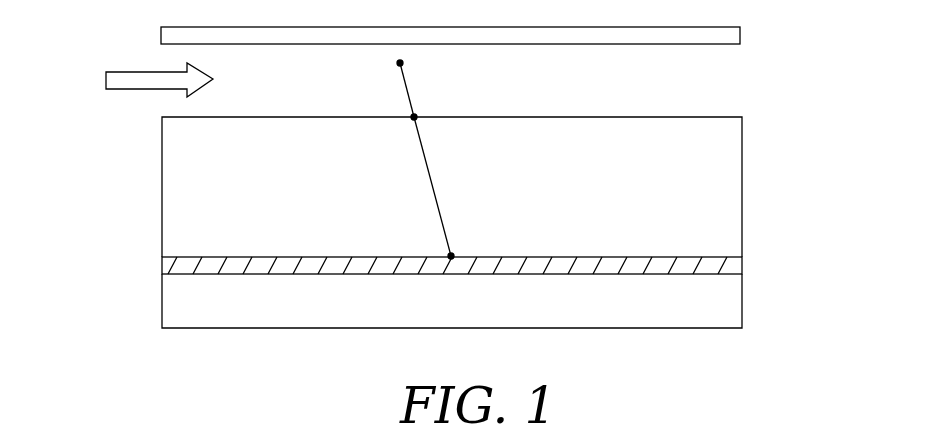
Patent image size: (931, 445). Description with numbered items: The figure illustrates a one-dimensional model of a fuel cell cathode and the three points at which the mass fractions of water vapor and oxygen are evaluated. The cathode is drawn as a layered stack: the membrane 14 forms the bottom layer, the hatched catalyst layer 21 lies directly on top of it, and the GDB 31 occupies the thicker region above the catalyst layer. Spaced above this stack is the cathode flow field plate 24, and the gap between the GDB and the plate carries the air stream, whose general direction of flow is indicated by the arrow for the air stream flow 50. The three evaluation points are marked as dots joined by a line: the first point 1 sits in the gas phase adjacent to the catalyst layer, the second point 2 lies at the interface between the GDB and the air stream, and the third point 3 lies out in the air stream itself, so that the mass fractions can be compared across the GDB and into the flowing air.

The first evaluation point 1 is at (453, 254).
The second evaluation point 2 is at (414, 117).
The third evaluation point 3 is at (400, 63).
The membrane 14 is at (729, 300).
The catalyst layer 21 is at (718, 265).
The cathode flow field plate 24 is at (740, 34).
The GDB 31 is at (727, 177).
The air stream flow 50 is at (115, 80).